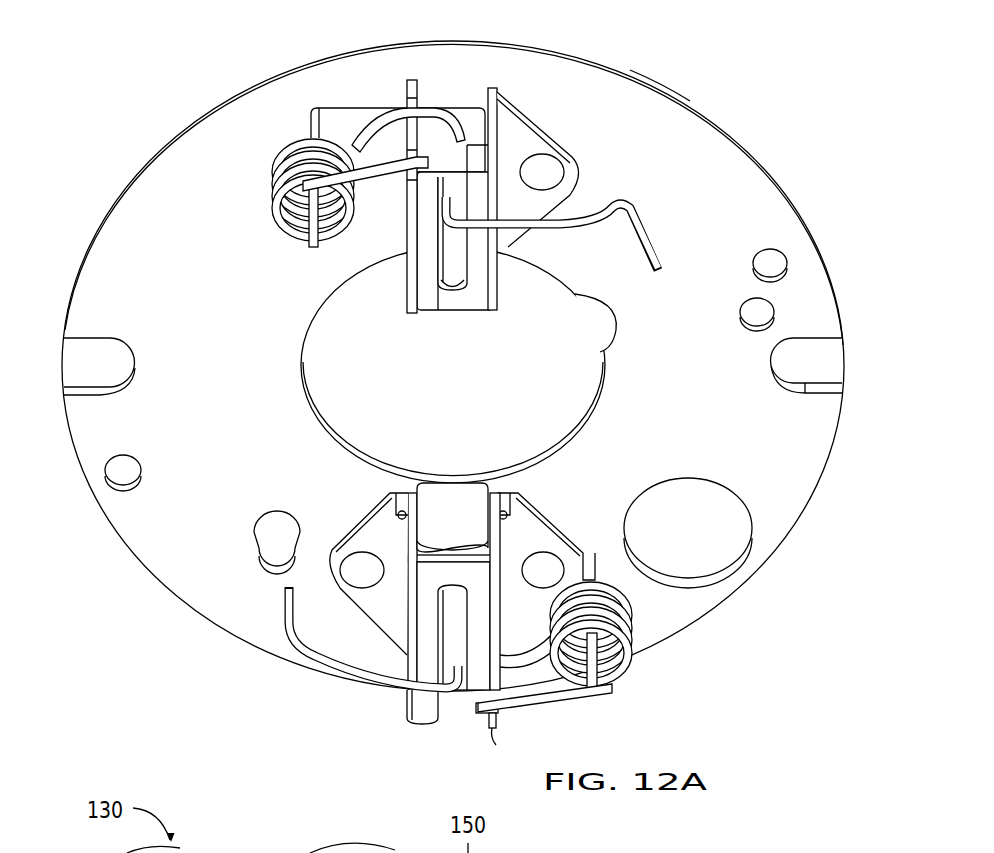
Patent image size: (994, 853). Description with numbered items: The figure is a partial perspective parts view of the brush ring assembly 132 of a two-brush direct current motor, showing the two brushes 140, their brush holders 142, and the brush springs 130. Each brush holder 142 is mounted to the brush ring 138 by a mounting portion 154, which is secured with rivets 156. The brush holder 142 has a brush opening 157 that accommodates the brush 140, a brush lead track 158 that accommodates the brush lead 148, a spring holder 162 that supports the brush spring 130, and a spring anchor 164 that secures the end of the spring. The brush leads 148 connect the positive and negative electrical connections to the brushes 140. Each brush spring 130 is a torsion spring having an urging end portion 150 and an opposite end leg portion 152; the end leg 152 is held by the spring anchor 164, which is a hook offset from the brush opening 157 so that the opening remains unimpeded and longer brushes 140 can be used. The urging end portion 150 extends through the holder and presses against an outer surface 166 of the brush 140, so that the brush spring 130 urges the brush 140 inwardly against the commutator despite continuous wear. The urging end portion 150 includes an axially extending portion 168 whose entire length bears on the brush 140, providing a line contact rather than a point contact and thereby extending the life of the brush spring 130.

The brush spring 130 is at (284, 152).
The brush ring assembly 132 is at (176, 120).
The brush ring 138 is at (657, 95).
The brush 140 is at (460, 250).
The brush holder 142 is at (336, 119).
The brush lead 148 is at (645, 240).
The urging end portion 150 is at (450, 146).
The end leg portion 152 is at (385, 175).
The mounting portion 154 is at (549, 148).
The rivet 156 is at (556, 170).
The brush opening 157 is at (423, 106).
The brush lead track 158 is at (447, 238).
The spring holder 162 is at (293, 240).
The spring anchor 164 is at (412, 160).
The outer surface 166 is at (468, 116).
The axially extending portion 168 is at (430, 116).